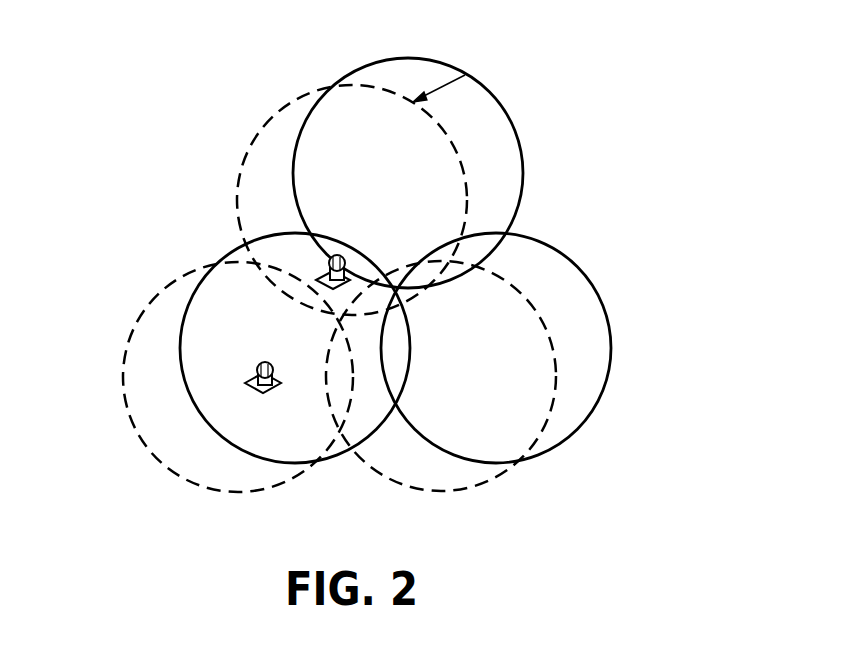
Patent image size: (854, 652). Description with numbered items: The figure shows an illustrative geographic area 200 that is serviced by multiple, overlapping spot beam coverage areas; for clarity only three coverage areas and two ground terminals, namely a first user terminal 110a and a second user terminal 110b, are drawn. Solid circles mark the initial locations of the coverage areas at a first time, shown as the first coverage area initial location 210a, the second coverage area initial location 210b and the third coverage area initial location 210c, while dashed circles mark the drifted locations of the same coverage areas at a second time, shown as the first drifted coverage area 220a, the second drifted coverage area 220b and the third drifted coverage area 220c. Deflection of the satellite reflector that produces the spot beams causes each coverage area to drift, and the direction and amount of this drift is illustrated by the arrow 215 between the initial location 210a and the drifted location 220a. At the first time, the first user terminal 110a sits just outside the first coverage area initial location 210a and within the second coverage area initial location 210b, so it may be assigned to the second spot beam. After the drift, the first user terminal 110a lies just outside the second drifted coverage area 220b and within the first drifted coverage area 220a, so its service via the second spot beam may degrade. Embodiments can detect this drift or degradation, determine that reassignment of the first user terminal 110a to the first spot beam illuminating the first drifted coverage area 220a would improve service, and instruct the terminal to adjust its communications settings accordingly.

The geographic area 200 is at (135, 94).
The first coverage area initial location 210a is at (519, 130).
The second coverage area initial location 210b is at (233, 247).
The third coverage area initial location 210c is at (585, 272).
The first drifted coverage area 220a is at (305, 98).
The second drifted coverage area 220b is at (167, 282).
The third drifted coverage area 220c is at (540, 315).
The arrow 215 is at (443, 85).
The first user terminal 110a is at (338, 254).
The second user terminal 110b is at (269, 361).